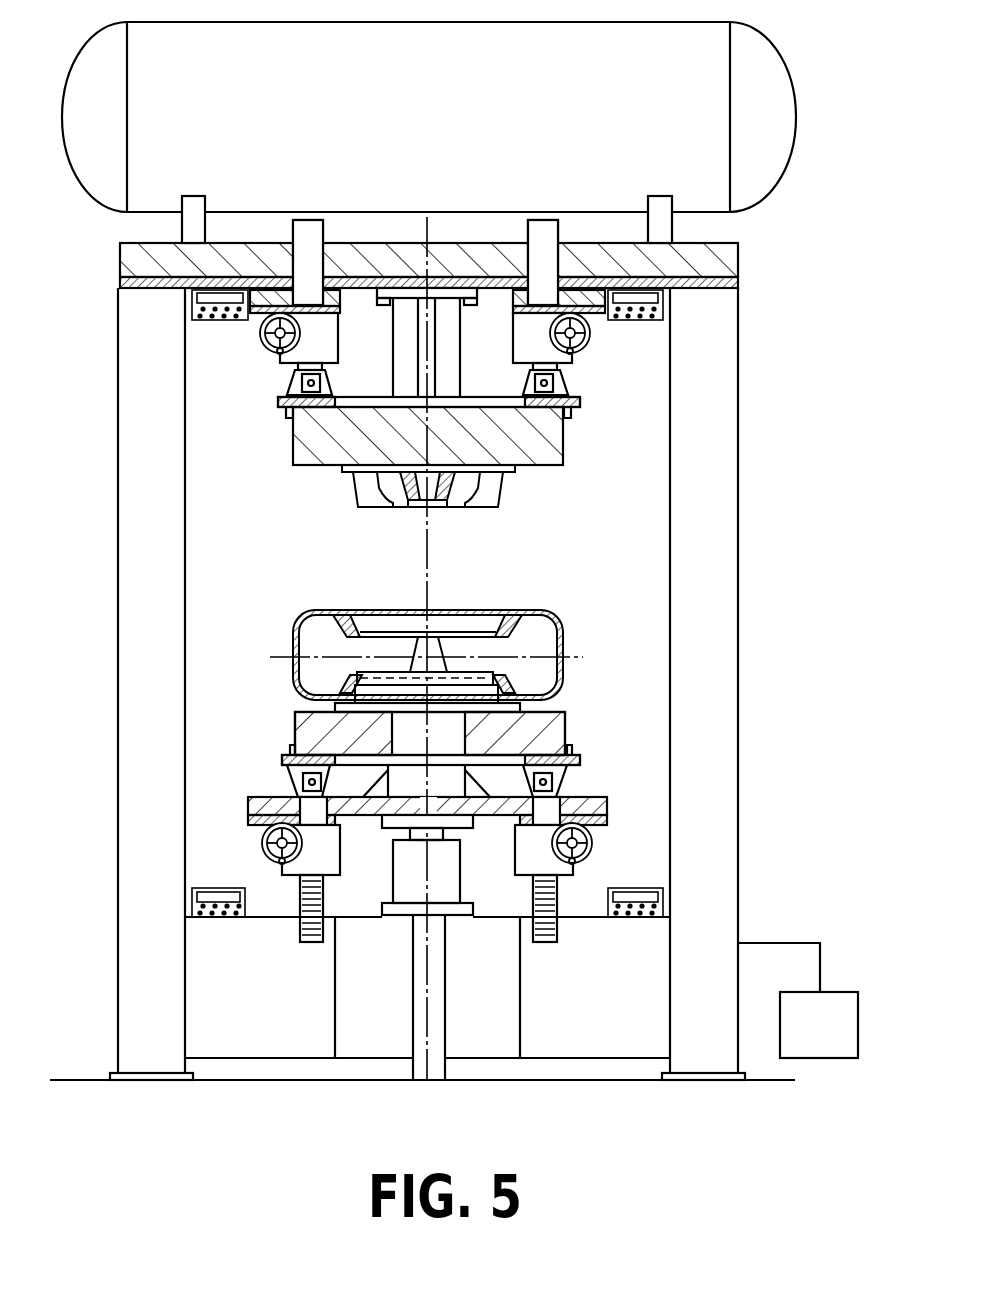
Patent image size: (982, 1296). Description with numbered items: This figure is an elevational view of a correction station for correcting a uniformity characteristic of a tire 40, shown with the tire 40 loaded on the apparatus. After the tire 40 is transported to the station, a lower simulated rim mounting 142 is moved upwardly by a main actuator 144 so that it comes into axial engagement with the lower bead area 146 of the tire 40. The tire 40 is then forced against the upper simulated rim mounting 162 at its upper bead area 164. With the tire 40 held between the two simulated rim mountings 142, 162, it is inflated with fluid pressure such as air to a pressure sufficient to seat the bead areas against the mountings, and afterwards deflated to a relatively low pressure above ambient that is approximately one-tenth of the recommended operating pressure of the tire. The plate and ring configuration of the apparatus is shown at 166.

The tire 40 is at (550, 614).
The lower simulated rim mounting 142 is at (520, 706).
The main actuator 144 is at (470, 878).
The lower bead area 146 is at (387, 662).
The upper simulated rim mounting 162 is at (480, 495).
The upper bead area 164 is at (408, 636).
The plate and ring configuration 166 is at (552, 480).